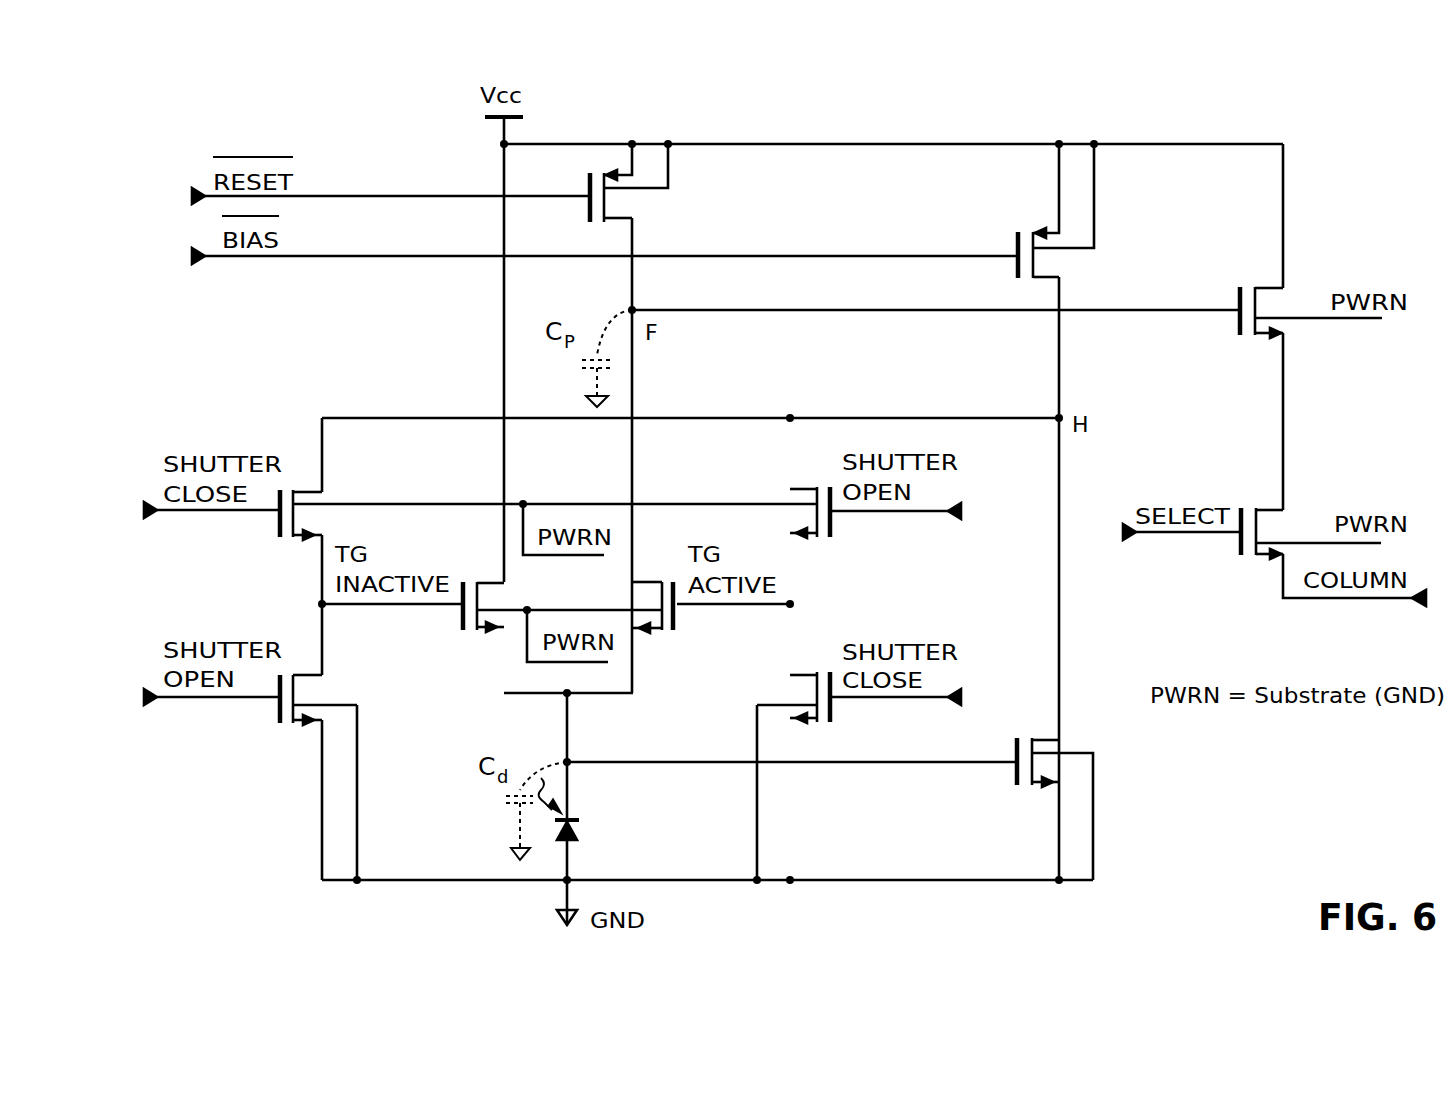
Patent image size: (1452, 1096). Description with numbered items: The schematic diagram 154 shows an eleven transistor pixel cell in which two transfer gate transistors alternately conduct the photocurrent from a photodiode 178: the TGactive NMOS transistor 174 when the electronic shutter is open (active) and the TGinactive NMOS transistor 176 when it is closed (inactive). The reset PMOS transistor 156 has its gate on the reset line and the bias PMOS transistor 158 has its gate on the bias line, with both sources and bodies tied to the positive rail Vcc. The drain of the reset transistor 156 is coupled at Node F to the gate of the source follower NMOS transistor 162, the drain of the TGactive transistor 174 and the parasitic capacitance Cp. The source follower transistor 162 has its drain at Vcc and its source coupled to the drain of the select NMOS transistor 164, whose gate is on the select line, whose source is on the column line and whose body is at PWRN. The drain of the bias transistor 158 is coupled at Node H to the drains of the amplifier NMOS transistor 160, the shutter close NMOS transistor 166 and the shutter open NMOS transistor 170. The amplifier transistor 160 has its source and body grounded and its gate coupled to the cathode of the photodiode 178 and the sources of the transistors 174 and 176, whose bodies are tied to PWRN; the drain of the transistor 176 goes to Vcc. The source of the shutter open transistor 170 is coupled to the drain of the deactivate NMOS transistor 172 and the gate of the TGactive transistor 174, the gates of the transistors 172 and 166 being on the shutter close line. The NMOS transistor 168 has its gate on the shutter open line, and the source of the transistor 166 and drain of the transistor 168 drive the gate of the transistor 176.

The schematic diagram 154 is at (1370, 152).
The reset PMOS transistor 156 is at (590, 202).
The bias PMOS transistor 158 is at (1018, 264).
The amplifier NMOS transistor 160 is at (1017, 773).
The source follower NMOS transistor 162 is at (1258, 286).
The select NMOS transistor 164 is at (1265, 507).
The shutter close NMOS transistor 166 is at (280, 527).
The NMOS transistor 168 is at (280, 714).
The shutter open NMOS transistor 170 is at (832, 530).
The deactivate NMOS transistor 172 is at (832, 715).
The TGactive NMOS transistor 174 is at (677, 625).
The TGinactive NMOS transistor 176 is at (463, 622).
The photodiode 178 is at (580, 835).